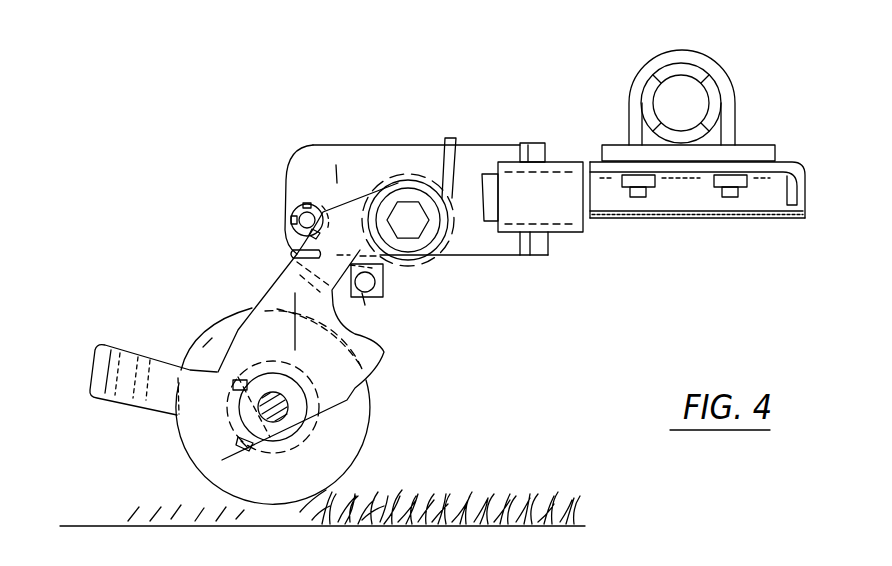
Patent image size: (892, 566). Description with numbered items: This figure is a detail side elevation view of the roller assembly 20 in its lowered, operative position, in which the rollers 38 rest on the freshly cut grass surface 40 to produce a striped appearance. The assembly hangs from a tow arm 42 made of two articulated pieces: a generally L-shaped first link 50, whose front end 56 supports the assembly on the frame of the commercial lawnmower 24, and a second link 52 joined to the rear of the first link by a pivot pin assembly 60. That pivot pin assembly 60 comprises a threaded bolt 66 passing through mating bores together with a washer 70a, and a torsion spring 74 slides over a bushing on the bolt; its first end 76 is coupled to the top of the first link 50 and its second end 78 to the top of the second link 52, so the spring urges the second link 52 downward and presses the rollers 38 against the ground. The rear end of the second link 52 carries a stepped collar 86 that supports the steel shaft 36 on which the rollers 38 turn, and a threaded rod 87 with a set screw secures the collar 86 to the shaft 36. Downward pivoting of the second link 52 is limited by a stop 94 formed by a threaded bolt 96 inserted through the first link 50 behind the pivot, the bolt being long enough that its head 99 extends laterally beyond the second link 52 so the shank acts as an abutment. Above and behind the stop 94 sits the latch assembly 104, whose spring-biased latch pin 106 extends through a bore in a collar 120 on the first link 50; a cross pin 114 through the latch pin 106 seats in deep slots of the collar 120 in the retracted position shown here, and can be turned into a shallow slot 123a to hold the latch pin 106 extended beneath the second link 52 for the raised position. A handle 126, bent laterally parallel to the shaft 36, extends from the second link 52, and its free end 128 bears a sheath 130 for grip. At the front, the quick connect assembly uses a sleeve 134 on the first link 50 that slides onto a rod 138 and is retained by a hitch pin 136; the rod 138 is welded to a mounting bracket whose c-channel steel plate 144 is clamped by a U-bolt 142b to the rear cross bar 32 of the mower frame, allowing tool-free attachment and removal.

The roller assembly 20 is at (122, 446).
The commercial lawnmower 24 is at (744, 63).
The rear cross bar 32 is at (710, 103).
The shaft 36 is at (273, 409).
The rollers 38 is at (223, 320).
The grass surface 40 is at (513, 520).
The tow arm 42 is at (488, 30).
The first link 50 is at (507, 143).
The second link 52 is at (277, 279).
The front end 56 is at (540, 143).
The pivot pin assembly 60 is at (402, 202).
The threaded bolt 66 is at (408, 230).
The washer 70a is at (432, 243).
The torsion spring 74 is at (375, 190).
The first end 76 is at (476, 106).
The second end 78 is at (290, 254).
The stepped collar 86 is at (288, 407).
The threaded rod 87 is at (236, 447).
The stop 94 is at (367, 307).
The threaded bolt 96 is at (363, 297).
The head 99 is at (372, 300).
The latch assembly 104 is at (288, 220).
The latch pin 106 is at (295, 232).
The cross pin 114 is at (303, 202).
The collar 120 is at (293, 208).
The shallow slot 123a is at (316, 200).
The handle 126 is at (126, 393).
The free end 128 is at (122, 334).
The sheath 130 is at (101, 350).
The sleeve 134 is at (567, 227).
The hitch pin 136 is at (493, 232).
The rod 138 is at (745, 211).
The U-bolt 142b is at (738, 125).
The c-channel steel plate 144 is at (785, 162).